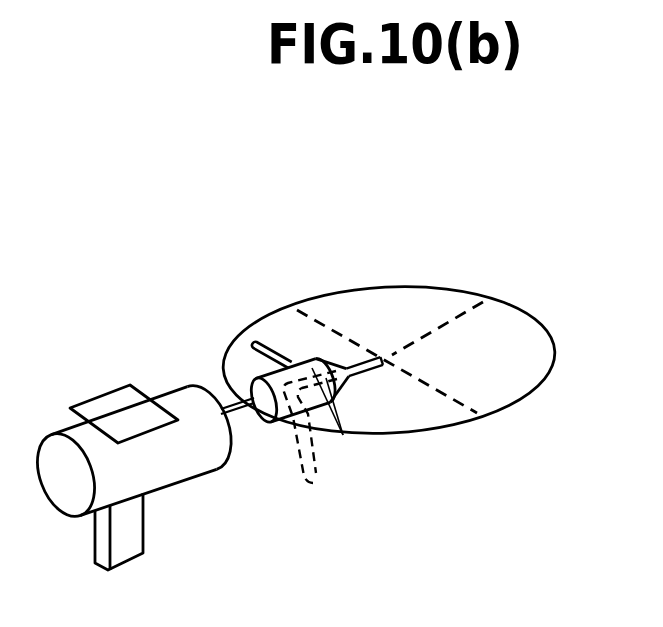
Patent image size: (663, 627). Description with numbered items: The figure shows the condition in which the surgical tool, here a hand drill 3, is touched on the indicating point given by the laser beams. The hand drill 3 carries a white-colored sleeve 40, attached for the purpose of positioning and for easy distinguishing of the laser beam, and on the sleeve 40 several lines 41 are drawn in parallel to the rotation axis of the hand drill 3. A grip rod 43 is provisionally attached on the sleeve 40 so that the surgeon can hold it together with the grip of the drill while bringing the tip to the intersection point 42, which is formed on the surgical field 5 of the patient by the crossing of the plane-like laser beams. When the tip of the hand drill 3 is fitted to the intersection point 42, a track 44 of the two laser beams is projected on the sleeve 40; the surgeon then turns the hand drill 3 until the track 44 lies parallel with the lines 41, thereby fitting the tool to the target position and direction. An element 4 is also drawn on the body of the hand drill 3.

The hand drill 3 is at (173, 485).
The plate 4 is at (113, 410).
The surgical field 5 is at (445, 288).
The sleeve 40 is at (253, 384).
The lines 41 is at (343, 435).
The intersection point 42 is at (386, 372).
The grip rod 43 is at (268, 348).
The track of the laser beams 44 is at (313, 483).